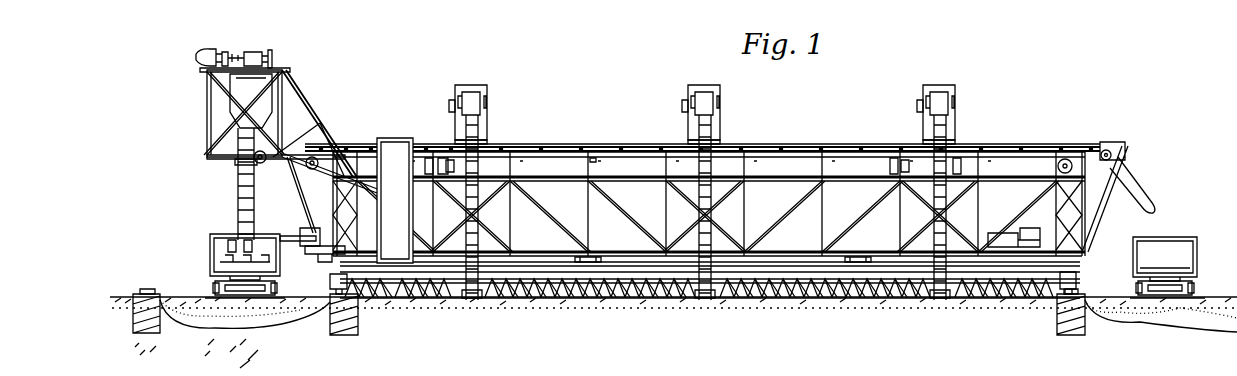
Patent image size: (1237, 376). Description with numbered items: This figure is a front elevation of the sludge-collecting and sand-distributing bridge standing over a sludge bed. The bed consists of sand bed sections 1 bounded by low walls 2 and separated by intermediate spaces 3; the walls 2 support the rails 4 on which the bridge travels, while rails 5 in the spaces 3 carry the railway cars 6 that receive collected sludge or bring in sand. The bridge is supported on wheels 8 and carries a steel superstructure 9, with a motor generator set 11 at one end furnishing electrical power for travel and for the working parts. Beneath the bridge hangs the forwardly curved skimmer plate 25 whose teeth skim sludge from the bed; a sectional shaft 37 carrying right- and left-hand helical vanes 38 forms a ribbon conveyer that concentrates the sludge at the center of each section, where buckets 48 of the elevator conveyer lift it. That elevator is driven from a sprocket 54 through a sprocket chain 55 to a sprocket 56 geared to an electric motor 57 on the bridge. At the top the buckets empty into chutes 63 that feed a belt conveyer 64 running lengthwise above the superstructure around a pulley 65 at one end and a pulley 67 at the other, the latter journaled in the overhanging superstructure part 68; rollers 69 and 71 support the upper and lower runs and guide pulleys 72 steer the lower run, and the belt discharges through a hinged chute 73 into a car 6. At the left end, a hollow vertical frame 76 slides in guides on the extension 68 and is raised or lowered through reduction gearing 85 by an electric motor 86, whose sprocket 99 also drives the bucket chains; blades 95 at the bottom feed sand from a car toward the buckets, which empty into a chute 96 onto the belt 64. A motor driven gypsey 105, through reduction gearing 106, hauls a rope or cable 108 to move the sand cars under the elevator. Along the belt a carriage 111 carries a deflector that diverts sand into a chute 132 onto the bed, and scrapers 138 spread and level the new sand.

The sand bed section 1 is at (120, 328).
The low wall 2 is at (340, 336).
The intermediate space 3 is at (236, 312).
The rail 4 is at (150, 289).
The car rail 5 is at (265, 300).
The railway car 6 is at (210, 247).
The wheel 8 is at (330, 279).
The superstructure 9 is at (551, 181).
The motor generator set 11 is at (998, 233).
The skimmer plate 25 is at (636, 299).
The shaft 37 is at (782, 299).
The helical vane 38 is at (556, 299).
The bucket 48 is at (712, 200).
The sprocket 54 is at (451, 102).
The sprocket chain 55 is at (455, 130).
The sprocket 56 is at (458, 168).
The electric motor 57 is at (425, 170).
The chute 63 is at (487, 90).
The belt conveyer 64 is at (760, 147).
The pulley 65 is at (1112, 155).
The pulley 67 is at (262, 164).
The overhanging superstructure part 68 is at (205, 96).
The roller 69 is at (519, 147).
The roller 71 is at (597, 162).
The guide pulley 72 is at (1058, 166).
The chute 73 is at (1135, 175).
The hollow vertical frame 76 is at (237, 169).
The reduction gearing 85 is at (258, 52).
The electric motor 86 is at (200, 56).
The blade 95 is at (229, 240).
The chute 96 is at (280, 122).
The sprocket 99 is at (237, 54).
The motor driven gypsey 105 is at (302, 236).
The reduction gearing 106 is at (318, 251).
The rope or cable 108 is at (304, 233).
The carriage 111 is at (386, 141).
The chute 132 is at (395, 200).
The scraper 138 is at (583, 258).